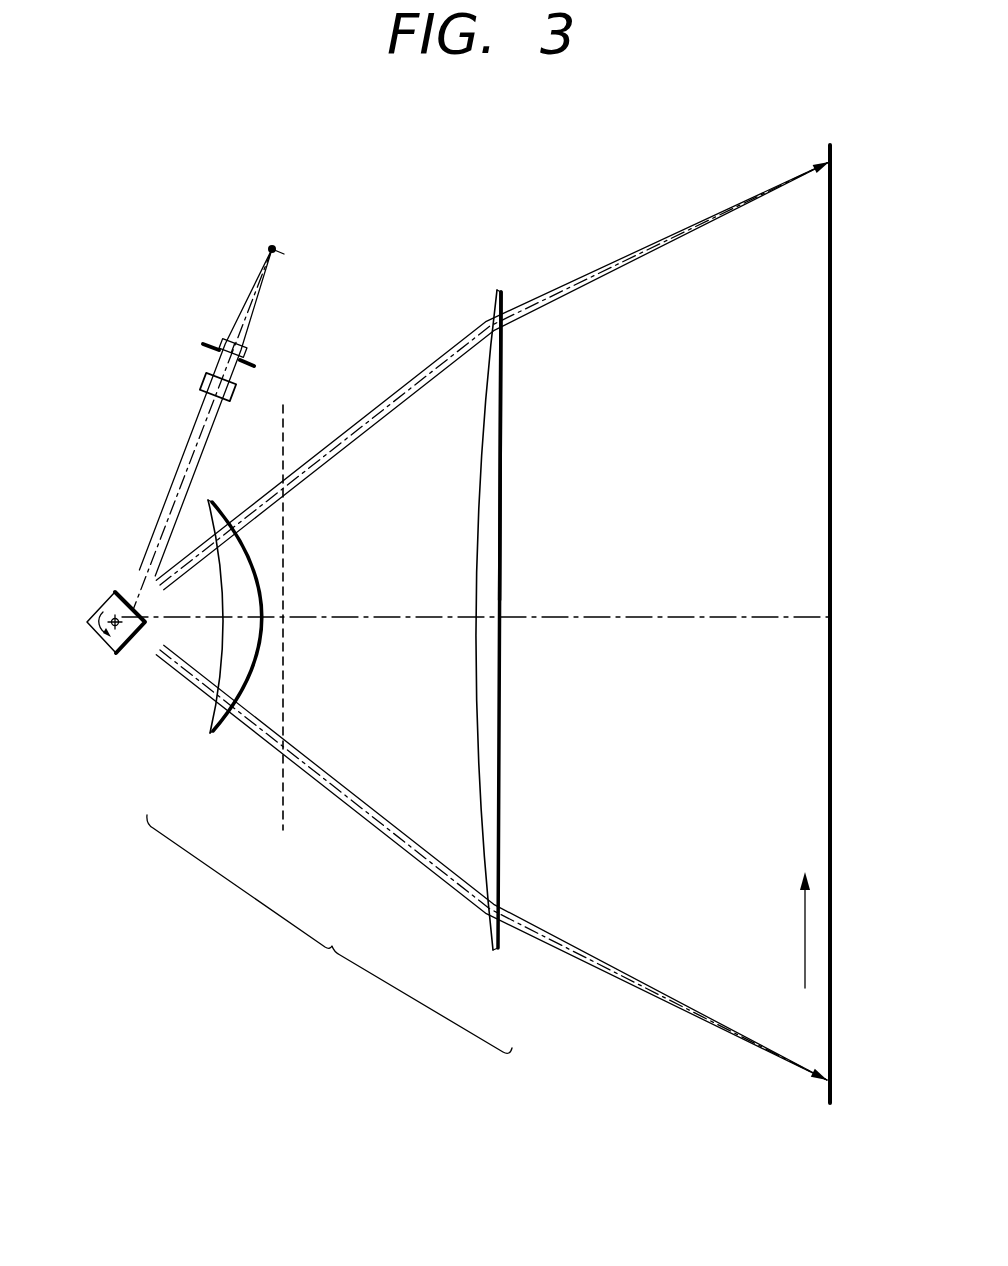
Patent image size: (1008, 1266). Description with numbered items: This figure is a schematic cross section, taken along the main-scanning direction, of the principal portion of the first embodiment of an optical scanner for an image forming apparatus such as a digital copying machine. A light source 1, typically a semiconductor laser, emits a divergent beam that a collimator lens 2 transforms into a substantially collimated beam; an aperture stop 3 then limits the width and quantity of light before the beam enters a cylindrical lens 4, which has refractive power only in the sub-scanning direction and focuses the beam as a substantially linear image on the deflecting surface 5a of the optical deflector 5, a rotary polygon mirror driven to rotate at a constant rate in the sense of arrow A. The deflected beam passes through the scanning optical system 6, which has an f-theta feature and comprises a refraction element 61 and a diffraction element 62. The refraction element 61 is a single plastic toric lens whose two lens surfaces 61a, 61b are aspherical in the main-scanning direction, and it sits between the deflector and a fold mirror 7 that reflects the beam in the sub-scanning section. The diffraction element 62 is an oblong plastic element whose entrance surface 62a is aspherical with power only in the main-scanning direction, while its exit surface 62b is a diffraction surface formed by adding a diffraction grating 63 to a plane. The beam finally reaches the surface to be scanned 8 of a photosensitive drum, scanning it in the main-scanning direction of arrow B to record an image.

The light source 1 is at (268, 247).
The collimator lens 2 is at (231, 342).
The aperture stop 3 is at (203, 347).
The cylindrical lens 4 is at (205, 385).
The optical deflector 5 is at (103, 612).
The deflecting surface 5a is at (129, 606).
The rotation direction arrow A is at (99, 634).
The scanning optical system 6 is at (329, 934).
The refraction element 61 is at (199, 623).
The lens surface 61a is at (212, 672).
The lens surface 61b is at (247, 712).
The fold mirror 7 is at (286, 822).
The diffraction element 62 is at (491, 651).
The entrance surface 62a is at (474, 762).
The diffraction surface 62b is at (500, 762).
The diffraction grating 63 is at (503, 472).
The surface to be scanned 8 is at (834, 380).
The main-scanning direction arrow B is at (805, 930).